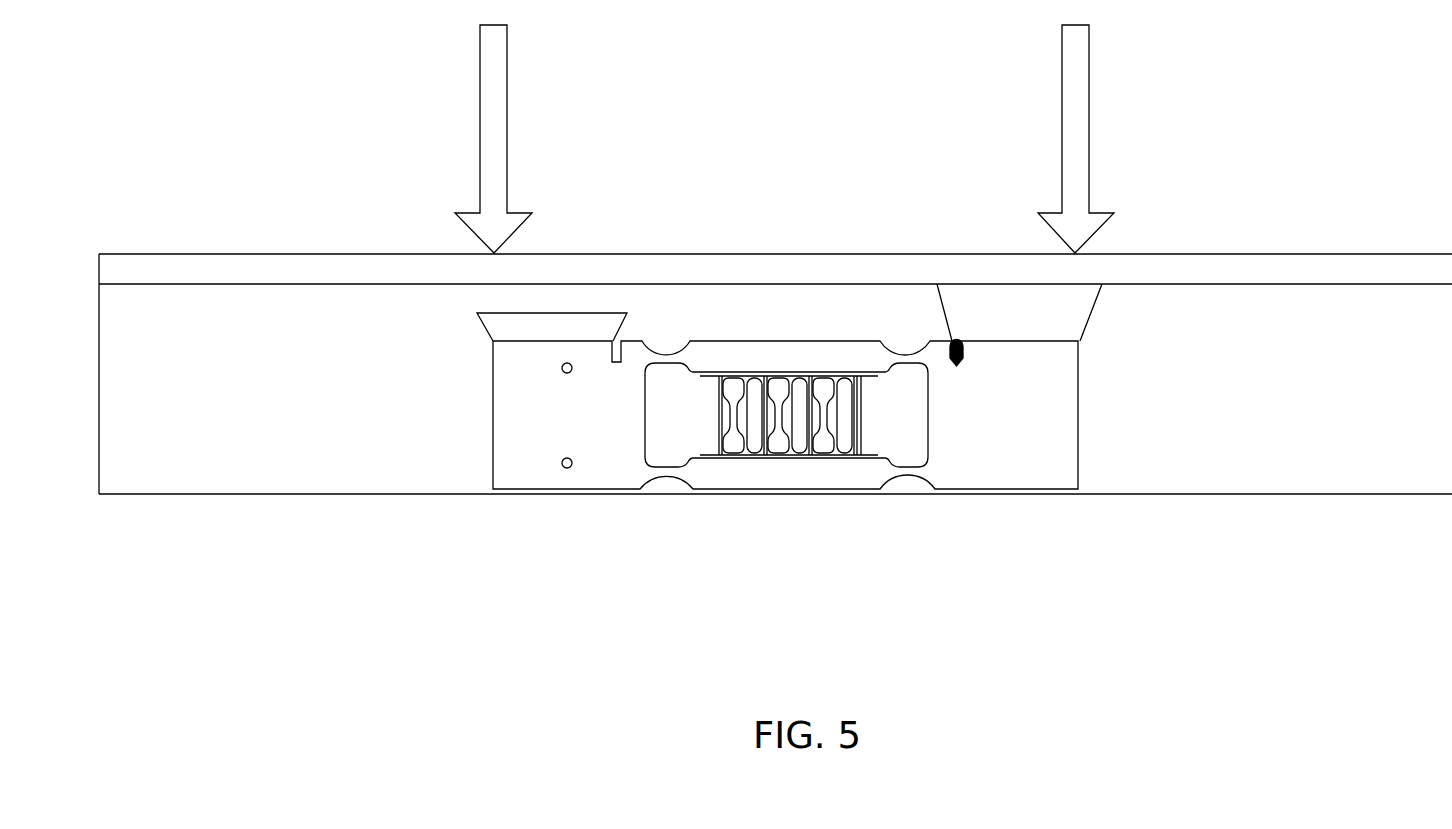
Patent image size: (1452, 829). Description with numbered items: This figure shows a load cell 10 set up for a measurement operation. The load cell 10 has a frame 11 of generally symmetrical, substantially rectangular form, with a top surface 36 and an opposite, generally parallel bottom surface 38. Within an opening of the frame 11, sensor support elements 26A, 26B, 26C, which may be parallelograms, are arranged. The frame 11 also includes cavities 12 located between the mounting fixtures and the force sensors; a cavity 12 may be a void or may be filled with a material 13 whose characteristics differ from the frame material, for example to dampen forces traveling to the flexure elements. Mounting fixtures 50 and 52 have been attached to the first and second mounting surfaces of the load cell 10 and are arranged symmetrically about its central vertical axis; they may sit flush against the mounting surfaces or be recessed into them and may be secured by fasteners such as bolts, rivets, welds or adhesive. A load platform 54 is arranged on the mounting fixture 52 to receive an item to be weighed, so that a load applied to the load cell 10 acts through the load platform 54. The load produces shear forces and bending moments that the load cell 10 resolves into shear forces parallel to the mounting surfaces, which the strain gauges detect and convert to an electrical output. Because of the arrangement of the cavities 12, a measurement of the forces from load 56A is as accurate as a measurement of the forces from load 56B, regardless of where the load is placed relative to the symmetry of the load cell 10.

The load cell 10 is at (1117, 425).
The frame 11 is at (492, 415).
The cavity 12 is at (617, 364).
The material 13 is at (951, 336).
The sensor support element 26A is at (738, 452).
The sensor support element 26B is at (786, 458).
The sensor support element 26C is at (841, 458).
The top surface 36 is at (455, 333).
The bottom surface 38 is at (462, 520).
The mounting fixture 50 is at (627, 313).
The mounting fixture 52 is at (1097, 310).
The load platform 54 is at (246, 254).
The load 56A is at (480, 113).
The load 56B is at (1062, 113).